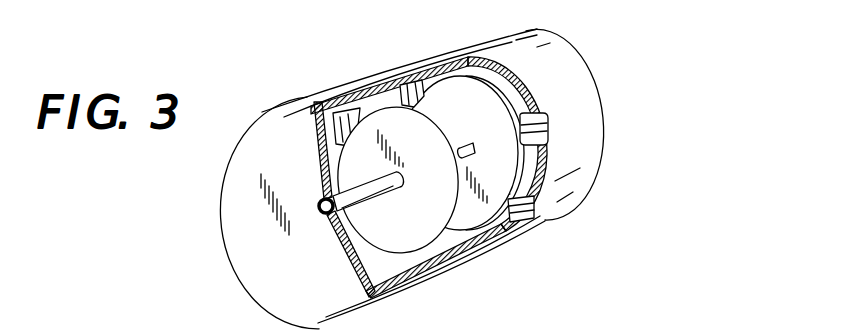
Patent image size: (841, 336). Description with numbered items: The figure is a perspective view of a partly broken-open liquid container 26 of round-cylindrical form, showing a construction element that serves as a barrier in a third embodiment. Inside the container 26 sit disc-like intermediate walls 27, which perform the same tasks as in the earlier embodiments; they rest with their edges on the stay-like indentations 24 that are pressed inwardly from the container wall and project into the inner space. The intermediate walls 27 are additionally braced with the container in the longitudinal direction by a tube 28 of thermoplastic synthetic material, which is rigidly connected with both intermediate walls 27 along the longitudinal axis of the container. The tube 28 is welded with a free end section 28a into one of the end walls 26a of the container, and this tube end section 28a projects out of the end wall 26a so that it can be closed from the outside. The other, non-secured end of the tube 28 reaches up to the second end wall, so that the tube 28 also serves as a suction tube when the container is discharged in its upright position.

The indentations 24 is at (390, 84).
The round-cylindrical liquid container 26 is at (593, 132).
The end wall of the container 26a is at (237, 222).
The disc-like intermediate walls 27 is at (492, 200).
The tube 28 is at (373, 195).
The free end section of the tube 28a is at (323, 213).